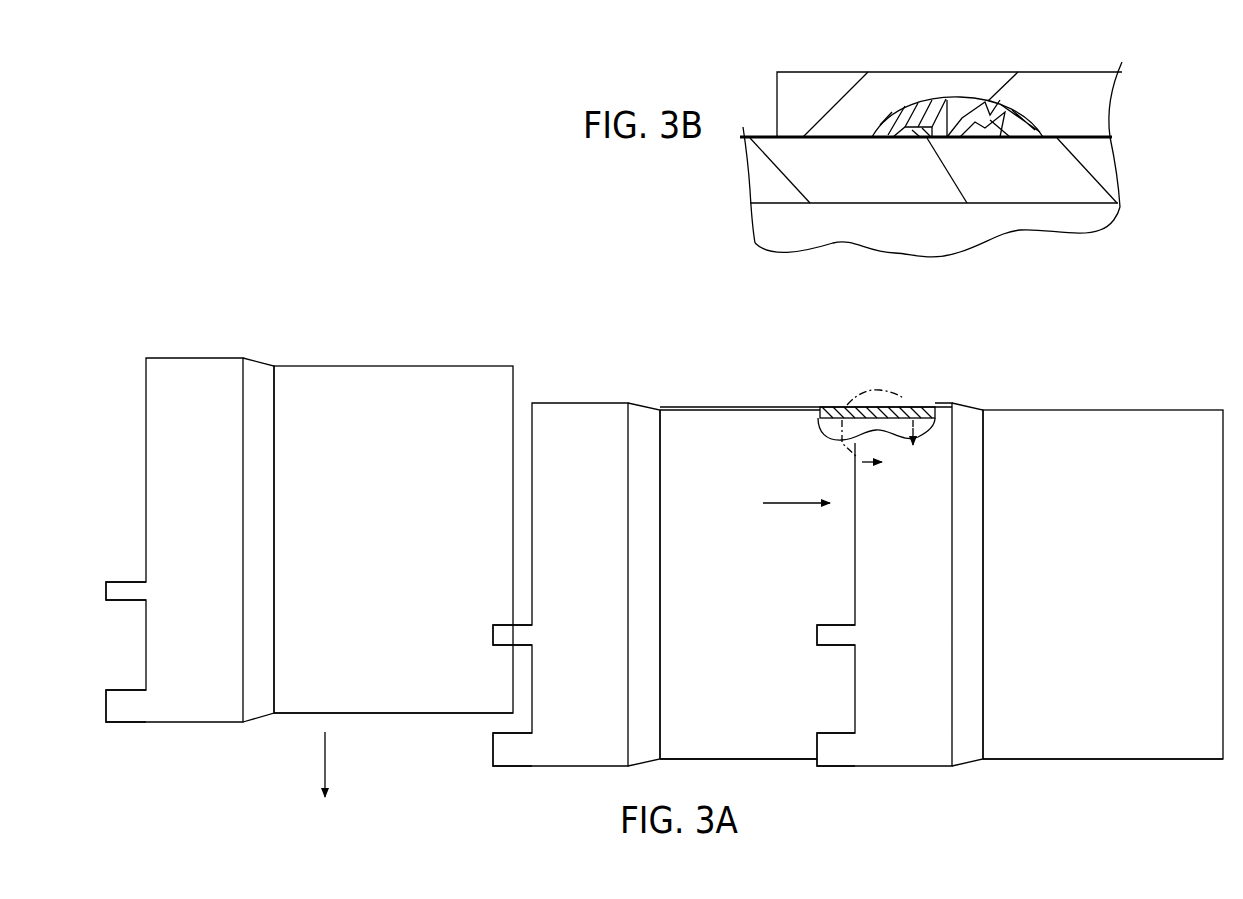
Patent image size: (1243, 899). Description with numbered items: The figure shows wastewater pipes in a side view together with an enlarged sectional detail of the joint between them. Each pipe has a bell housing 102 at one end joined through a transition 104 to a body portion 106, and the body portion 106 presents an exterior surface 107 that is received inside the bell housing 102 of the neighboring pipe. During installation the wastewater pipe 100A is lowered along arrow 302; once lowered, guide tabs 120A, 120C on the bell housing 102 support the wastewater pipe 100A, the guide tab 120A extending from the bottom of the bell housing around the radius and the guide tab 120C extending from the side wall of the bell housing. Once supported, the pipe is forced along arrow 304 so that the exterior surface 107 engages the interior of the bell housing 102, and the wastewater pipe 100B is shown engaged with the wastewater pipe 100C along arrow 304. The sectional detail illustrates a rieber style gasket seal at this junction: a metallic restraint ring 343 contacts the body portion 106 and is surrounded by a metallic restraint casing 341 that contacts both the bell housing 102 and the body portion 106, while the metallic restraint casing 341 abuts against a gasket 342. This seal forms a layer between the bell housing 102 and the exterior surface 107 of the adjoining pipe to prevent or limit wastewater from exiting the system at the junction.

In FIG. 3A, the wastewater pipe 100A is at (143, 312).
In FIG. 3A, the wastewater pipe 100B is at (654, 348).
In FIG. 3A, the wastewater pipe 100C is at (977, 350).
In FIG. 3A, the bell housing 102 is at (243, 337).
In FIG. 3B, the bell housing 102 is at (793, 90).
In FIG. 3A, the transition portion 104 is at (243, 343).
In FIG. 3A, the body portion 106 is at (513, 345).
In FIG. 3B, the body portion 106 is at (1028, 183).
In FIG. 3A, the exterior surface 107 is at (403, 693).
In FIG. 3A, the guide tab 120A is at (128, 713).
In FIG. 3A, the guide tab 120C is at (123, 588).
In FIG. 3A, the arrow 302 is at (320, 762).
In FIG. 3A, the arrow 304 is at (796, 500).
In FIG. 3B, the metallic restraint casing 341 is at (922, 110).
In FIG. 3B, the gasket 342 is at (972, 112).
In FIG. 3B, the metallic restraint ring 343 is at (917, 134).